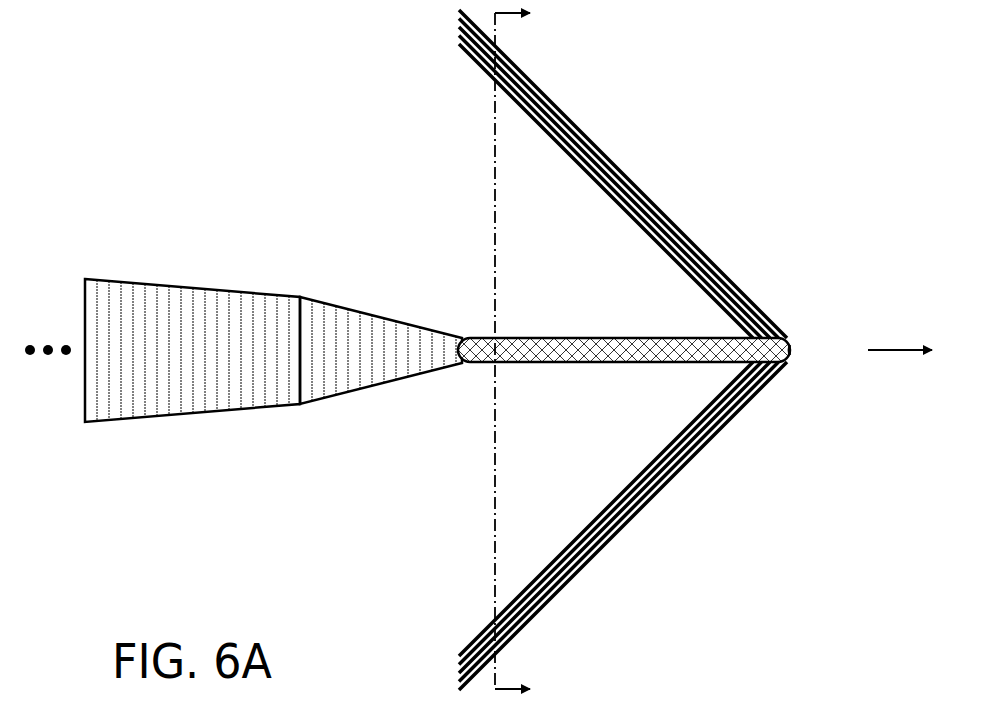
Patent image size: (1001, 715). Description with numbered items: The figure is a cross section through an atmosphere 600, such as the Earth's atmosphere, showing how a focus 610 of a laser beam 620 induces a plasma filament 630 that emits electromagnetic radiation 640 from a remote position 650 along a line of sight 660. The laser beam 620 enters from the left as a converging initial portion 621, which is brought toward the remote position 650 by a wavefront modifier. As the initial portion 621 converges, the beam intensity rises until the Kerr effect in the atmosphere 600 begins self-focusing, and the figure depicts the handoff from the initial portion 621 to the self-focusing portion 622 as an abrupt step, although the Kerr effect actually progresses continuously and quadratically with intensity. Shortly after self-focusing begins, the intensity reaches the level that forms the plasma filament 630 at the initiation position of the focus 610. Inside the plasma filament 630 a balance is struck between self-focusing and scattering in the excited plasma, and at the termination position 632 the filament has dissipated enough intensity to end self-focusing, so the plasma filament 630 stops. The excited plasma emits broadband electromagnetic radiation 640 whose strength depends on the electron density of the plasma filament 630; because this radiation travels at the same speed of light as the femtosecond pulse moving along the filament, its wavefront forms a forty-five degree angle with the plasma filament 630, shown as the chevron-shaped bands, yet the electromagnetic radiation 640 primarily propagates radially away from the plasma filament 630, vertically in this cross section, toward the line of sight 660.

The atmosphere 600 is at (51, 57).
The focus 610 is at (472, 339).
The laser beam 620 is at (243, 337).
The converging initial portion 621 is at (193, 288).
The self-focusing portion 622 is at (372, 315).
The plasma filament 630 is at (639, 327).
The termination position 632 is at (791, 350).
The electromagnetic radiation 640 is at (583, 133).
The remote position 650 is at (452, 209).
The line of sight 660 is at (905, 349).